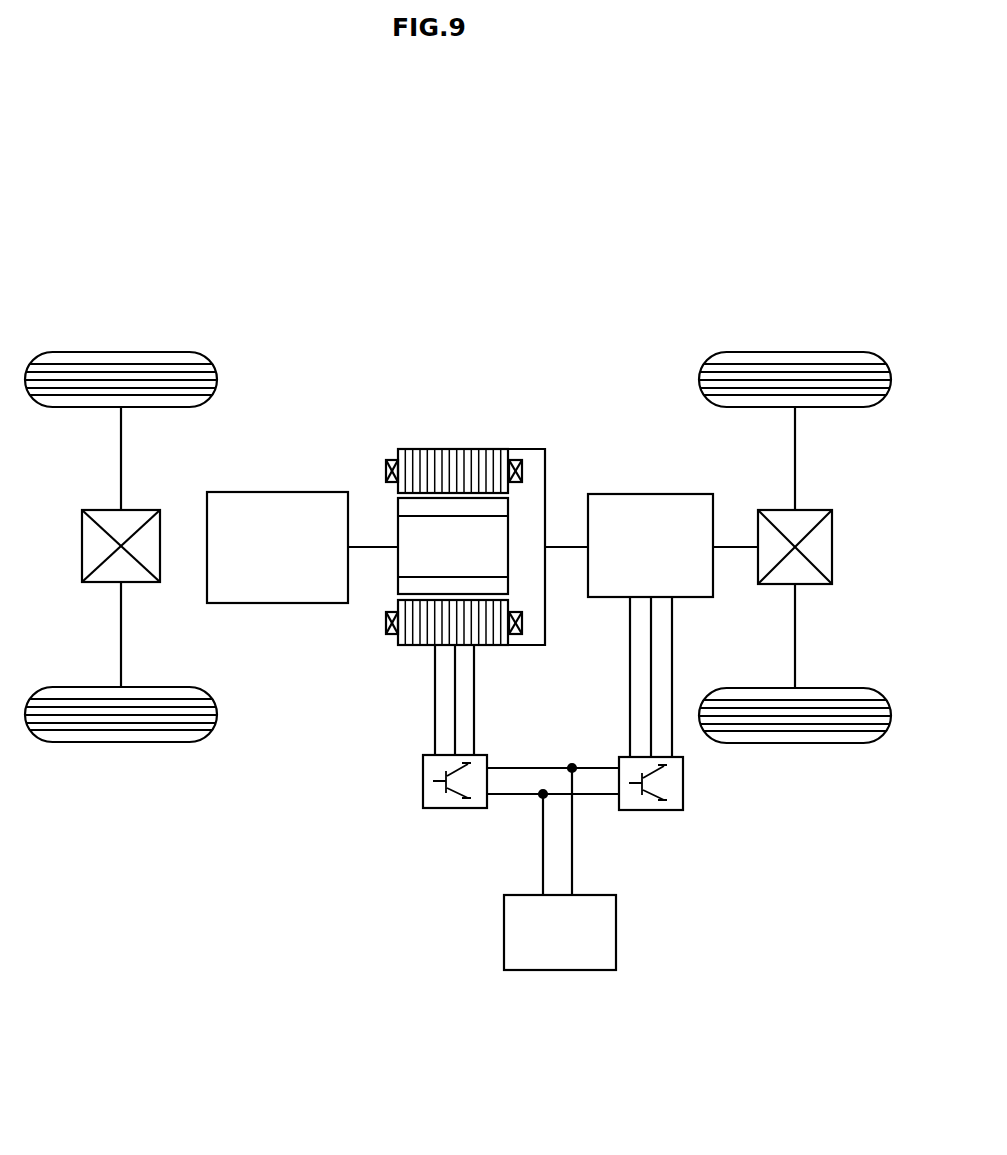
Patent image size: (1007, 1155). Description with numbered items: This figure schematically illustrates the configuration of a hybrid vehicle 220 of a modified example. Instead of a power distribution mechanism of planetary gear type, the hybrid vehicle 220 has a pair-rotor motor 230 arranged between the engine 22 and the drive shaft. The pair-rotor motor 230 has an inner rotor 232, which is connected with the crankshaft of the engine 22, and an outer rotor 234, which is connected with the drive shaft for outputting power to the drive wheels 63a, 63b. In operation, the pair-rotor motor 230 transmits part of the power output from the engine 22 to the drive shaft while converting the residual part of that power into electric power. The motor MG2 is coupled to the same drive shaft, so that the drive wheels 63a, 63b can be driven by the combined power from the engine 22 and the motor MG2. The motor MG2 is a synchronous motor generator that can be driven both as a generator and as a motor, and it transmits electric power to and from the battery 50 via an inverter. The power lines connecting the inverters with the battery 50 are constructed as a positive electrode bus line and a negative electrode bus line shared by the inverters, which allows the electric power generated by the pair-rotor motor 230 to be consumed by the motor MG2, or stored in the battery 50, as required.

The hybrid vehicle 220 is at (535, 228).
The engine 22 is at (278, 604).
The pair-rotor motor 230 is at (460, 298).
The inner rotor 232 is at (398, 530).
The outer rotor 234 is at (455, 449).
The motor MG2 is at (652, 494).
The battery 50 is at (616, 927).
The drive wheel 63a is at (795, 352).
The drive wheel 63b is at (795, 745).